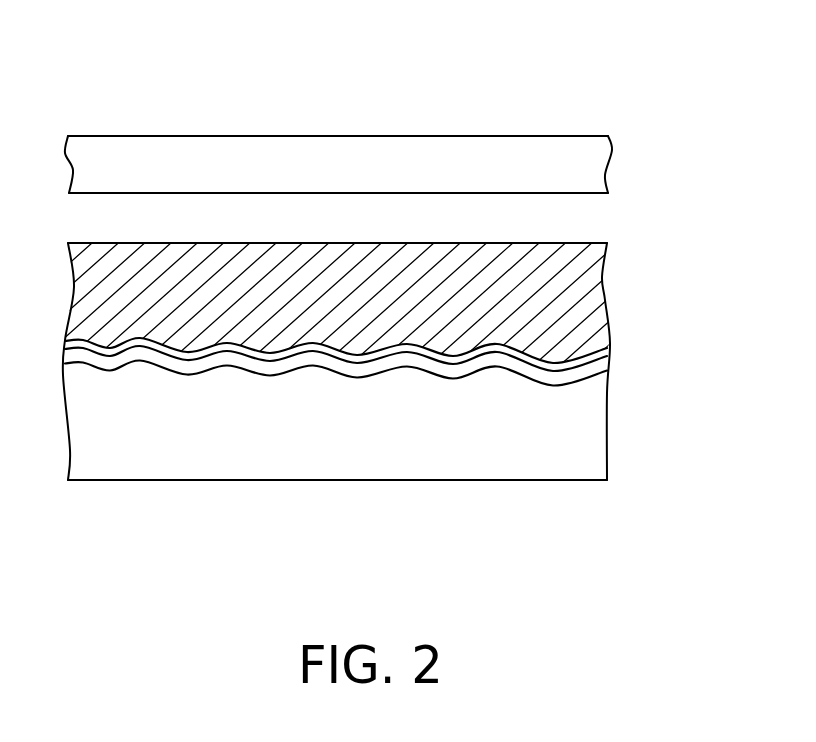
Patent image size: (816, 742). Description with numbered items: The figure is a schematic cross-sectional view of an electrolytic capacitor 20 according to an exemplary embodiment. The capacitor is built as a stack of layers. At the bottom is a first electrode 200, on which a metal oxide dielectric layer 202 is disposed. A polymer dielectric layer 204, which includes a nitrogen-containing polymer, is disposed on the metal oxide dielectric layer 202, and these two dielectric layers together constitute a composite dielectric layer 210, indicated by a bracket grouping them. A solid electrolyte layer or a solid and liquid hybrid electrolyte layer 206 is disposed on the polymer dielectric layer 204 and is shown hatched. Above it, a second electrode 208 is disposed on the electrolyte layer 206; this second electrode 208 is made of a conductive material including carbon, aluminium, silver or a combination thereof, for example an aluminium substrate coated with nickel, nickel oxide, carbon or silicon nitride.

The electrolytic capacitor 20 is at (583, 82).
The first electrode 200 is at (597, 417).
The metal oxide dielectric layer 202 is at (600, 362).
The polymer dielectric layer 204 is at (608, 345).
The solid electrolyte layer or solid and liquid hybrid electrolyte layer 206 is at (592, 300).
The second electrode 208 is at (595, 177).
The composite dielectric layer 210 is at (413, 356).